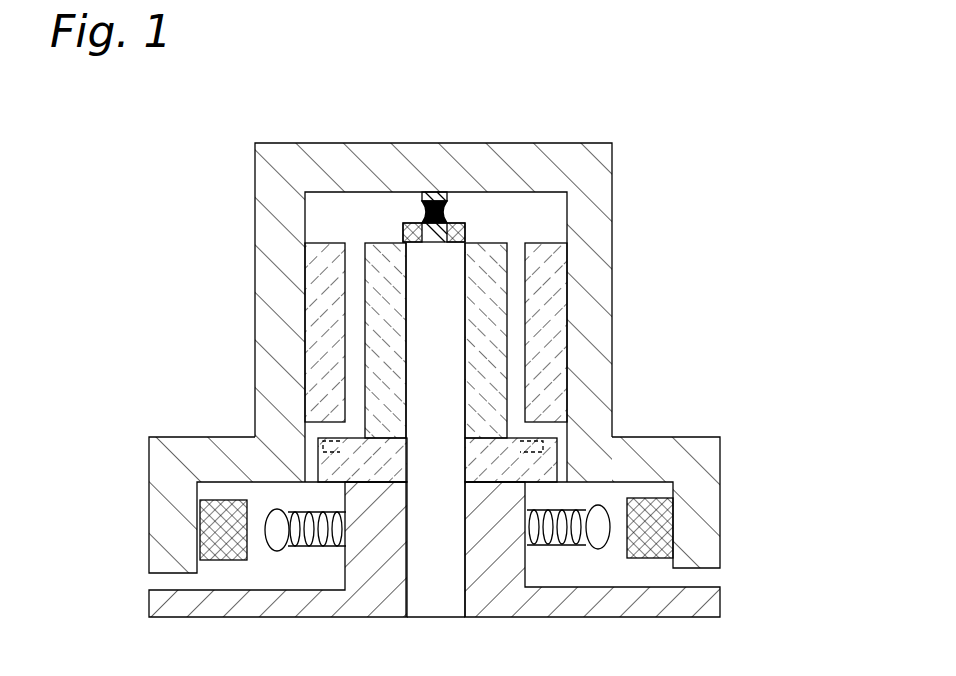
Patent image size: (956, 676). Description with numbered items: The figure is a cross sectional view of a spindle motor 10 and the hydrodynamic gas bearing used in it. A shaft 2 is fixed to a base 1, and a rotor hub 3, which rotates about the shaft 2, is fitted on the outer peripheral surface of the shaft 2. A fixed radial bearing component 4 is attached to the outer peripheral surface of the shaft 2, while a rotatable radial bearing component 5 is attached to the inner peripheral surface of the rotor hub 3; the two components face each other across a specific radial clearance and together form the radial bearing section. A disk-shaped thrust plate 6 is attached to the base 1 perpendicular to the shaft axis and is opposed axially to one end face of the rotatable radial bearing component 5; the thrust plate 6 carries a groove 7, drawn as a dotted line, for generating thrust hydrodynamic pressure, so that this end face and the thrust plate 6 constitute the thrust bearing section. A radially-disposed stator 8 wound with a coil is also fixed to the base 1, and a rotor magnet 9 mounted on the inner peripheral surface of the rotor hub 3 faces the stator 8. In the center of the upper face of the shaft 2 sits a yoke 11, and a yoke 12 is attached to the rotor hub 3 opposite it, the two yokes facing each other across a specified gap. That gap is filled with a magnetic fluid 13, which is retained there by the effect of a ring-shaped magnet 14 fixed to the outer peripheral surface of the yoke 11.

The base 1 is at (378, 593).
The shaft 2 is at (437, 596).
The rotor hub 3 is at (268, 220).
The radial bearing component 4 is at (375, 283).
The rotatable radial bearing component 5 is at (322, 340).
The thrust plate 6 is at (307, 458).
The groove 7 is at (325, 462).
The stator 8 is at (273, 548).
The rotor magnet 9 is at (213, 553).
The spindle motor 10 is at (573, 86).
The yoke 11 is at (440, 243).
The yoke 12 is at (435, 199).
The magnetic fluid 13 is at (448, 214).
The ring-shaped magnet 14 is at (463, 222).